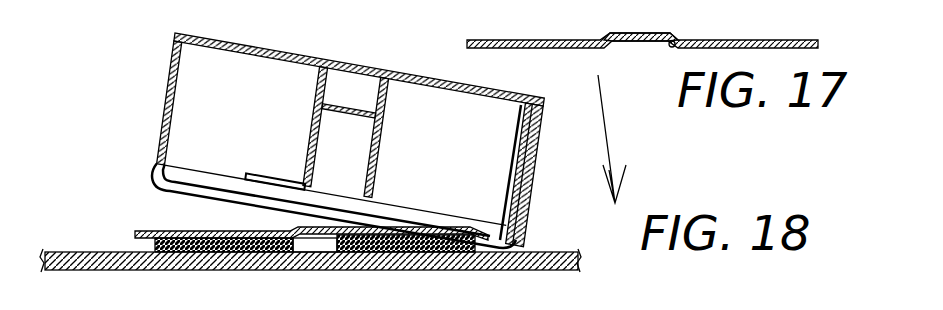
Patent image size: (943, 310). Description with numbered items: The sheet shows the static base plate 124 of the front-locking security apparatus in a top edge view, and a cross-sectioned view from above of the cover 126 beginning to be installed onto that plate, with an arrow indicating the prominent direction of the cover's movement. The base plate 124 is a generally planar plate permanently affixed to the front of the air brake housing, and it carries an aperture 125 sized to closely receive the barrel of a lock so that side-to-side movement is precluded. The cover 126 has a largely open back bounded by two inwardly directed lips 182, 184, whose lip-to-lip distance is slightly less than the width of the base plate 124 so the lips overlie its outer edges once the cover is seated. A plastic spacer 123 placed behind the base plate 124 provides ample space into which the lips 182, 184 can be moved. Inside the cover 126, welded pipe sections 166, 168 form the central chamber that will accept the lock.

In FIG. 18, the plastic spacer 123 is at (155, 249).
In FIG. 17, the base plate 124 is at (558, 40).
In FIG. 18, the base plate 124 is at (440, 232).
In FIG. 17, the aperture in base plate 125 is at (650, 35).
In FIG. 18, the cover 126 is at (167, 97).
In FIG. 18, the pipe section 166 is at (320, 90).
In FIG. 18, the pipe section 168 is at (307, 157).
In FIG. 18, the lip 182 is at (493, 240).
In FIG. 18, the lip 184 is at (153, 185).